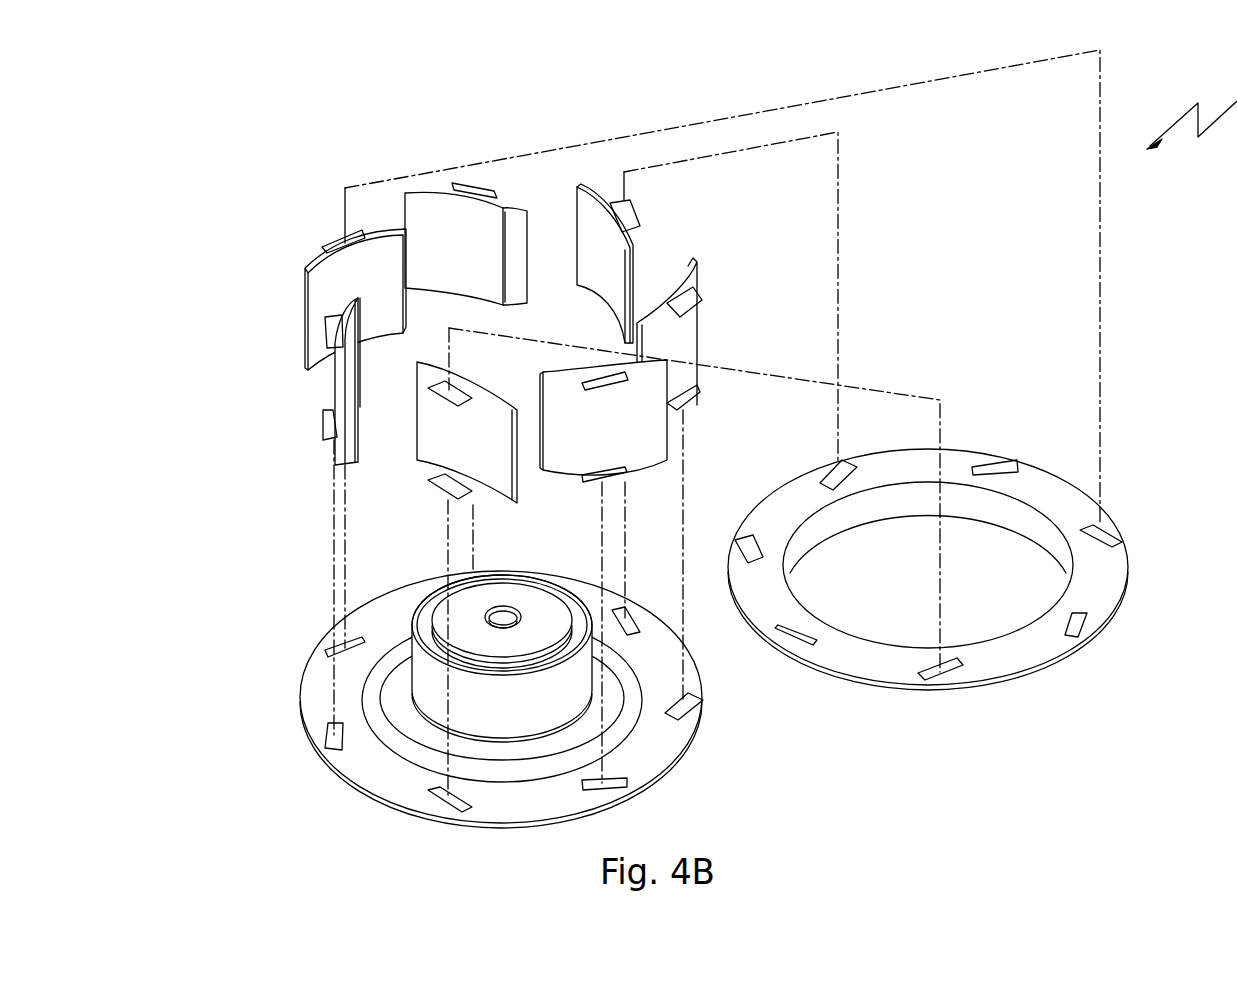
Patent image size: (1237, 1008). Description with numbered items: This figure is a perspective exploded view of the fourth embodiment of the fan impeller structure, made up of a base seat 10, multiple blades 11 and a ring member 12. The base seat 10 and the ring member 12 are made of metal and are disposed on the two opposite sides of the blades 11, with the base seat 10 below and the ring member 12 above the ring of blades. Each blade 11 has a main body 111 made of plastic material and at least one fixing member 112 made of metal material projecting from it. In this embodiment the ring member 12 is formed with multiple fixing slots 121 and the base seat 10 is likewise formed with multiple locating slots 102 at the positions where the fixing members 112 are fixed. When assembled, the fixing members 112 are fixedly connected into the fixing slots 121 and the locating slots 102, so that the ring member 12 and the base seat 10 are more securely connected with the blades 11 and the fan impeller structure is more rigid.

The base seat 10 is at (697, 685).
The locating slots 102 is at (690, 712).
The blades 11 is at (430, 343).
The main body 111 is at (306, 300).
The fixing member 112 is at (332, 247).
The ring member 12 is at (1108, 592).
The fixing slots 121 is at (1084, 642).